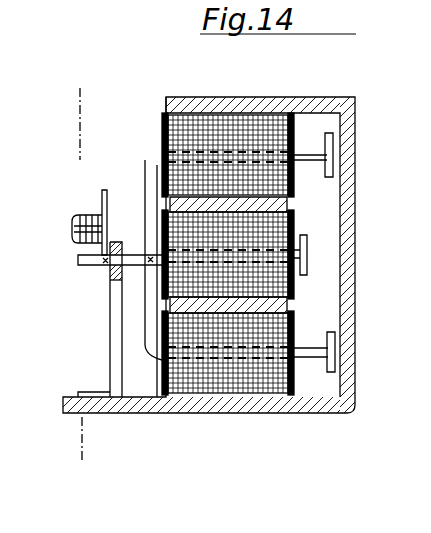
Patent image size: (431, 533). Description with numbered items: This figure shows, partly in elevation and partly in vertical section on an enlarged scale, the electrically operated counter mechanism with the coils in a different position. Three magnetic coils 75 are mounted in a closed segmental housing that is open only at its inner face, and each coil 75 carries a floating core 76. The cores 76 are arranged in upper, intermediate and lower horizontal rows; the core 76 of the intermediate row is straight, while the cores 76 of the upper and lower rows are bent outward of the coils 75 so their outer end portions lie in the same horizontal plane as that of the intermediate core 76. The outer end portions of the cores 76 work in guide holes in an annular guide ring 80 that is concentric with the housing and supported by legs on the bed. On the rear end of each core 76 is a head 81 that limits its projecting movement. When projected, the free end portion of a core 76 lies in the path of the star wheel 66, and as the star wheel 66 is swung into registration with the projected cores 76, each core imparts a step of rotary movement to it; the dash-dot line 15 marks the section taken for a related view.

The section line 15 is at (108, 83).
The star wheel 66 is at (102, 203).
The magnetic coil 75 is at (230, 135).
The floating core 76 is at (157, 170).
The annular guide ring 80 is at (111, 273).
The head 81 is at (327, 176).